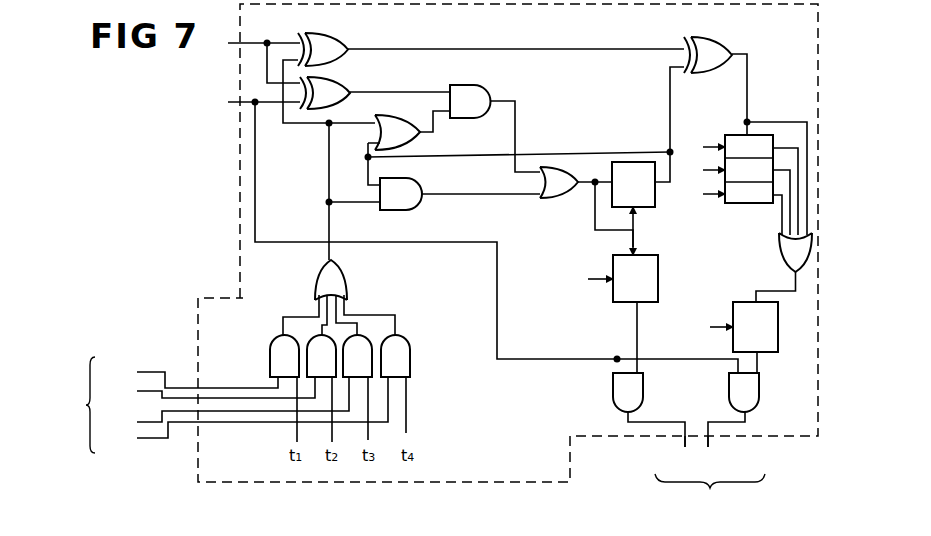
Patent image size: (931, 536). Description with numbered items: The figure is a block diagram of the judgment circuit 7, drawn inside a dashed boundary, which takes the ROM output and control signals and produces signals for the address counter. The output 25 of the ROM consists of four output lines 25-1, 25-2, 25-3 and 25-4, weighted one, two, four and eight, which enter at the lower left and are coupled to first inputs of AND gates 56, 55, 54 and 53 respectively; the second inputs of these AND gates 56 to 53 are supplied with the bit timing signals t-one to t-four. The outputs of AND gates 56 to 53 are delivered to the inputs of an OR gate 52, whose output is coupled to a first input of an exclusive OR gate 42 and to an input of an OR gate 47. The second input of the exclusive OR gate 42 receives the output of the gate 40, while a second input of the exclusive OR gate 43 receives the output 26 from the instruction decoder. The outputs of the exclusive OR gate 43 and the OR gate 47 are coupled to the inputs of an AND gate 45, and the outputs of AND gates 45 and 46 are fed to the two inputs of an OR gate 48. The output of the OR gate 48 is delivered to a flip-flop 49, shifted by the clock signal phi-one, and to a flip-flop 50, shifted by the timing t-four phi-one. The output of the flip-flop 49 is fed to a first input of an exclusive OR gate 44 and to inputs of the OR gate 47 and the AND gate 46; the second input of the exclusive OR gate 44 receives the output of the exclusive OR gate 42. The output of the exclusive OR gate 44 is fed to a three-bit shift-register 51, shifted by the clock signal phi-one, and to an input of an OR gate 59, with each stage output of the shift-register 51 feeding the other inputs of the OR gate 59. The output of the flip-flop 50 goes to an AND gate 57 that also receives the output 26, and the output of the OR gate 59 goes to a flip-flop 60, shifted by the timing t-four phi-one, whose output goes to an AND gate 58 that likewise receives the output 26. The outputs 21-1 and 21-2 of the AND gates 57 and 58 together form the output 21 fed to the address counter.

The judgment circuit 7 is at (575, 9).
The gate 40 is at (254, 57).
The output of the instruction decoder 26 is at (473, 216).
The exclusive OR gate 42 is at (339, 38).
The exclusive OR gate 43 is at (348, 88).
The exclusive OR gate 44 is at (725, 47).
The AND gate 45 is at (488, 93).
The AND gate 46 is at (422, 189).
The OR gate 47 is at (398, 122).
The OR gate 48 is at (572, 180).
The flip-flop 49 is at (660, 207).
The flip-flop 50 is at (613, 303).
The 3-bit shift-register 51 is at (735, 140).
The OR gate 52 is at (347, 284).
The AND gate 53 is at (410, 346).
The AND gate 54 is at (372, 334).
The AND gate 55 is at (312, 338).
The AND gate 56 is at (272, 335).
The AND gate 57 is at (613, 398).
The AND gate 58 is at (729, 392).
The OR gate 59 is at (779, 246).
The flip-flop 60 is at (771, 352).
The output 21 is at (710, 492).
The output 21-1 is at (683, 448).
The output 21-2 is at (710, 448).
The output of ROM 25 is at (86, 410).
The output line 25-1 is at (189, 373).
The output line 25-2 is at (208, 390).
The output line 25-3 is at (225, 406).
The output line 25-4 is at (244, 414).